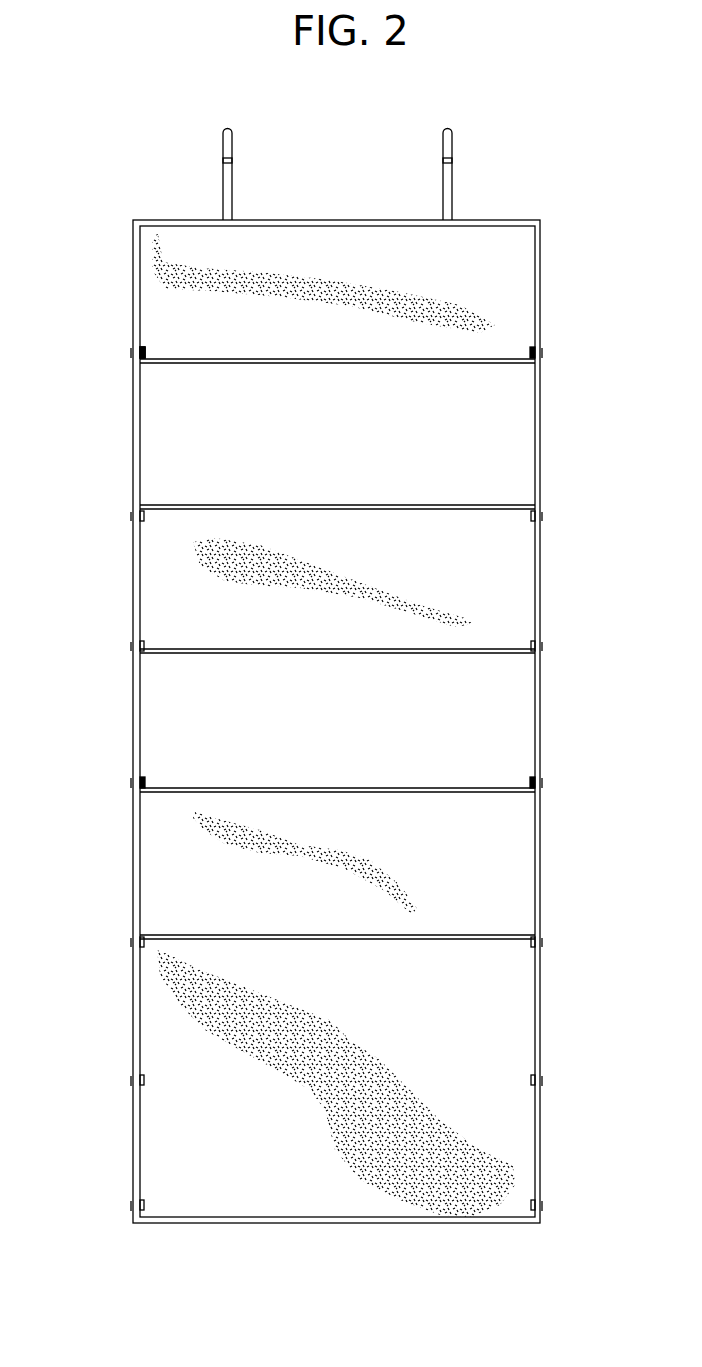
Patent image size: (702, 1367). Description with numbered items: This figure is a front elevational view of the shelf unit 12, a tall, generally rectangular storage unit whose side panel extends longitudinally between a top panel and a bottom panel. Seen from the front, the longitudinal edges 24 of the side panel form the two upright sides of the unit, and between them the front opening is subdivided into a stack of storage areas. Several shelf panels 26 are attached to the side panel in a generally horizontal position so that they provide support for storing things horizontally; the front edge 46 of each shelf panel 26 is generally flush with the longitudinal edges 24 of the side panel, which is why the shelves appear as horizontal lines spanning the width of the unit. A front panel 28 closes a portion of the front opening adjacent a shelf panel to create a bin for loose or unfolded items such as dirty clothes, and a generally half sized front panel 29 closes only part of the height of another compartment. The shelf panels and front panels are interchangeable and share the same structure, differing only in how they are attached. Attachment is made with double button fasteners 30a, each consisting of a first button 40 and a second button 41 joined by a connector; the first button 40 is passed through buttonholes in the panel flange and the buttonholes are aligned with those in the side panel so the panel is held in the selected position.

The shelf unit 12 is at (476, 212).
The longitudinal edge of the side panel 24 is at (134, 463).
The shelf panel 26 is at (204, 372).
The front panel 28 is at (160, 1038).
The half sized front panel 29 is at (146, 574).
The double button fastener 30a is at (131, 340).
The first button 40 is at (137, 353).
The second button 41 is at (148, 356).
The front edge of the shelf panel 46 is at (190, 794).